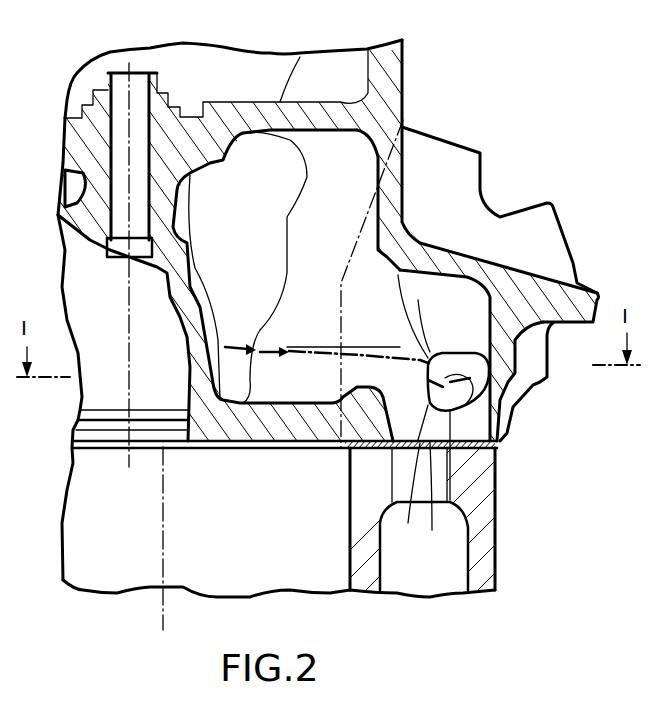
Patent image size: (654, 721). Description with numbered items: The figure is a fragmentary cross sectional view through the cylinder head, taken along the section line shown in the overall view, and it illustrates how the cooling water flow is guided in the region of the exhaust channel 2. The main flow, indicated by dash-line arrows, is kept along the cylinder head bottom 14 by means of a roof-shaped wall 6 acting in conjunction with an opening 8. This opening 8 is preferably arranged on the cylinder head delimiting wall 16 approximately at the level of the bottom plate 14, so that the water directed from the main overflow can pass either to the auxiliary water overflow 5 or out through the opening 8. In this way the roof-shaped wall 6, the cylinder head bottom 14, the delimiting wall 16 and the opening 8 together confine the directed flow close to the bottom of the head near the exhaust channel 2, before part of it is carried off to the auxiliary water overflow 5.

The exhaust channel 2 is at (165, 336).
The auxiliary water overflow 5 is at (424, 516).
The roof-shaped wall 6 is at (440, 263).
The opening 8 is at (460, 358).
The cylinder head bottom 14 is at (272, 422).
The cylinder head delimiting wall 16 is at (533, 378).